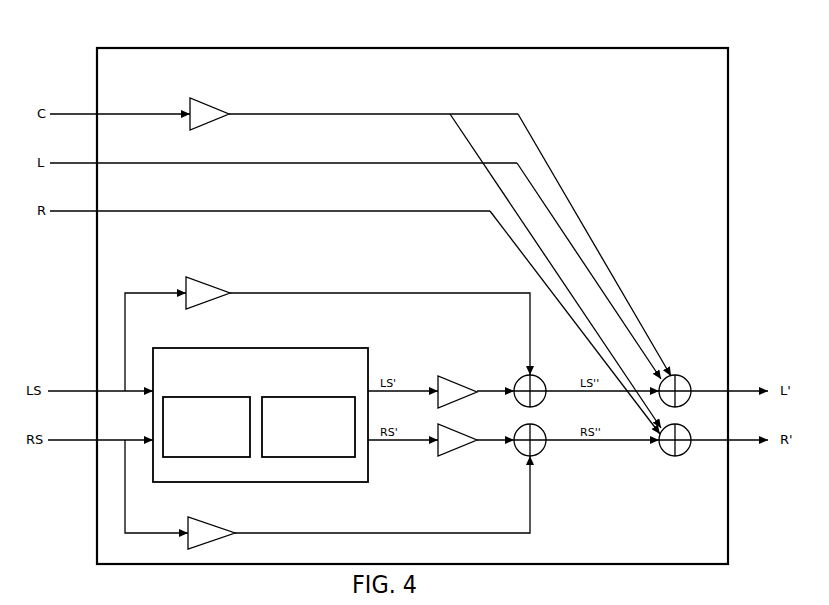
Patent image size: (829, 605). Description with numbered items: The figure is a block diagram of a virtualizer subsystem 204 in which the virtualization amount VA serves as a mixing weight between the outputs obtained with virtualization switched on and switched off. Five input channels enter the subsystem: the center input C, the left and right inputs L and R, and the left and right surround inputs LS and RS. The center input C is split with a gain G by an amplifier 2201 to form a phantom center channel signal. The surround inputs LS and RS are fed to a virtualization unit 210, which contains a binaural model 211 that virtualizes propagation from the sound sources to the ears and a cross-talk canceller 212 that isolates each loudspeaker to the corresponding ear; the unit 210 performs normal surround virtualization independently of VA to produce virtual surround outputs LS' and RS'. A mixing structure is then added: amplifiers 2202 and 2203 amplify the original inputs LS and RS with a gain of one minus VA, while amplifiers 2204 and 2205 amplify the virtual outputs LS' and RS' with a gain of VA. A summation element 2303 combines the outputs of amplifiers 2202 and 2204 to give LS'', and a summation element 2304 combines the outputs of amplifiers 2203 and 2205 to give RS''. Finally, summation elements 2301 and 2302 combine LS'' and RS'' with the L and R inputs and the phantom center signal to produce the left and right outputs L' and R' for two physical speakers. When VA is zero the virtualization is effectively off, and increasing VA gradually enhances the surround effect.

The virtualizer subsystem 204 is at (178, 48).
The amplifier 2201 is at (190, 100).
The amplifier 2202 is at (186, 282).
The amplifier 2203 is at (188, 520).
The amplifier 2204 is at (438, 379).
The amplifier 2205 is at (438, 428).
The virtualization unit 210 is at (216, 348).
The binaural model 211 is at (188, 397).
The cross-talk canceller 212 is at (333, 397).
The summation element 2301 is at (687, 378).
The summation element 2302 is at (690, 428).
The summation element 2303 is at (542, 379).
The summation element 2304 is at (545, 430).